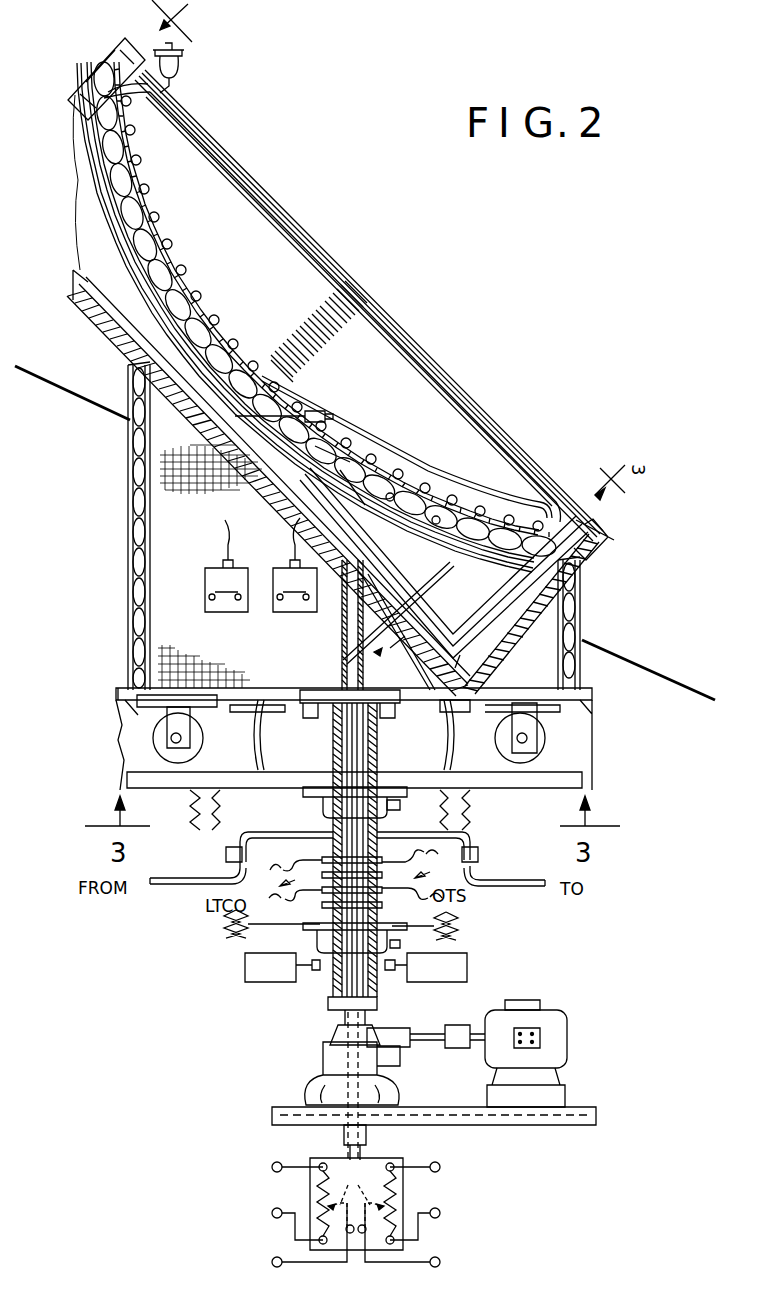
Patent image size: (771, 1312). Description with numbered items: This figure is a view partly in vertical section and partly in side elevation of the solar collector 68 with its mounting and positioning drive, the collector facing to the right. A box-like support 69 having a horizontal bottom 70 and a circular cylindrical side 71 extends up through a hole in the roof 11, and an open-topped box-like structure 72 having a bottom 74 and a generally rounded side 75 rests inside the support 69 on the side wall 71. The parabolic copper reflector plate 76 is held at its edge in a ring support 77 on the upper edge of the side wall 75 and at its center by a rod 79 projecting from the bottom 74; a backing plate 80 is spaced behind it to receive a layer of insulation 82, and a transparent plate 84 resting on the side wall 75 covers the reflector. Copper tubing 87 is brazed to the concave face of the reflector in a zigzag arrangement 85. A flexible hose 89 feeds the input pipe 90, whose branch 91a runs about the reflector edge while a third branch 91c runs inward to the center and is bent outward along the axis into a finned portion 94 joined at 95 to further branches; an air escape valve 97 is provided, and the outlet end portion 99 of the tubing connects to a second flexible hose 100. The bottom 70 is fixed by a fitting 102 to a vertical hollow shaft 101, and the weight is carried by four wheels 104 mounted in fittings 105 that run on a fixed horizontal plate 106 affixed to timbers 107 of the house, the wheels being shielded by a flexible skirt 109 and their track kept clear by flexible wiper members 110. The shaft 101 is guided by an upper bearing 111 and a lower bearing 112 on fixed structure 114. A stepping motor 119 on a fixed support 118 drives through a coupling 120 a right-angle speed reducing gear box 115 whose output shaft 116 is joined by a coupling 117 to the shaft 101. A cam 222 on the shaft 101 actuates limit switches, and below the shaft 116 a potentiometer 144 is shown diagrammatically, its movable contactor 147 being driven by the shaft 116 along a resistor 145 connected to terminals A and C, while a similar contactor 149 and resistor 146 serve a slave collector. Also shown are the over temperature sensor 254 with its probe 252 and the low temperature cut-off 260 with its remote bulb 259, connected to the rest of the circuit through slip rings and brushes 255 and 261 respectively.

The roof 11 is at (62, 385).
The collector 68 is at (226, 150).
The box-like support 69 is at (125, 680).
The horizontal bottom 70 is at (482, 712).
The circular cylindrical side 71 is at (128, 553).
The open-topped box-like structure 72 is at (540, 650).
The bottom 74 is at (202, 420).
The rounded side 75 is at (505, 650).
The parabolic reflector plate 76 is at (392, 508).
The ring support 77 is at (584, 525).
The rod 79 is at (262, 372).
The backing plate 80 is at (392, 522).
The layer of insulation 82 is at (132, 215).
The transparent plate 84 is at (413, 342).
The zigzag arrangement 85 is at (178, 272).
The tubing 87 is at (458, 505).
The flexible hose 89 is at (540, 886).
The input pipe 90 is at (540, 608).
The branch 91a is at (383, 372).
The third input branch 91c is at (466, 490).
The finned portion 94 is at (326, 348).
The joint 95 is at (360, 312).
The air escape valve 97 is at (186, 62).
The portion 99 is at (400, 622).
The flexible hose 100 is at (178, 886).
The vertical hollow shaft 101 is at (370, 745).
The fitting 102 is at (318, 716).
The wheels 104 is at (188, 748).
The fittings 105 is at (530, 722).
The supporting plate 106 is at (500, 780).
The timbers 107 is at (208, 832).
The flexible skirt 109 is at (594, 740).
The flexible wiper members 110 is at (260, 728).
The bearing 111 is at (303, 793).
The lower bearing 112 is at (320, 938).
The fixed structure 114 is at (228, 936).
The speed reducing gear box 115 is at (322, 1062).
The output shaft 116 is at (362, 1022).
The coupling 117 is at (328, 1000).
The fixed support 118 is at (520, 1120).
The stepping motor 119 is at (568, 1042).
The coupling 120 is at (460, 1050).
The potentiometer 144 is at (408, 1160).
The resistor 145 is at (318, 1198).
The resistor 146 is at (396, 1193).
The movable contactor 147 is at (338, 1215).
The movable contactor 149 is at (372, 1215).
The cam 222 is at (396, 958).
The probe 252 is at (348, 458).
The over temperature switch 254 is at (284, 582).
The slip rings and brushes 255 is at (460, 860).
The remote bulb 259 is at (334, 412).
The low temperature cut-off 260 is at (215, 580).
The slip rings and brushes 261 is at (270, 884).